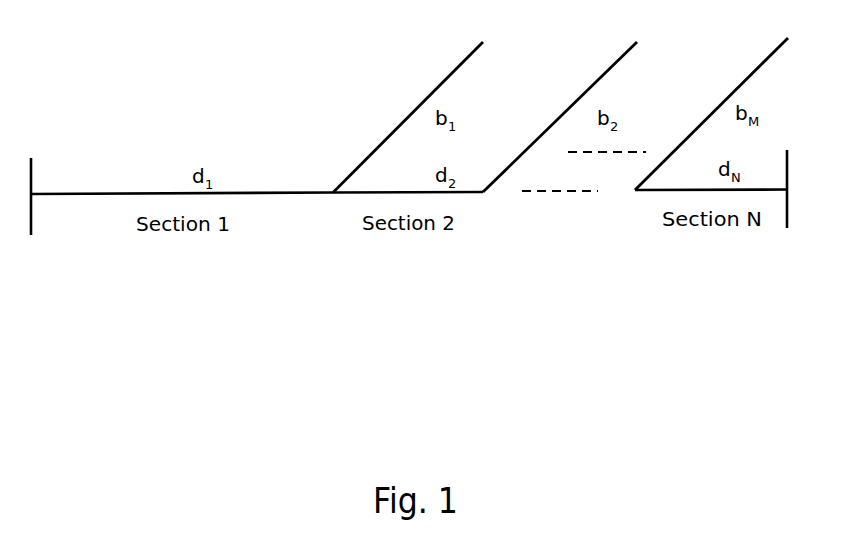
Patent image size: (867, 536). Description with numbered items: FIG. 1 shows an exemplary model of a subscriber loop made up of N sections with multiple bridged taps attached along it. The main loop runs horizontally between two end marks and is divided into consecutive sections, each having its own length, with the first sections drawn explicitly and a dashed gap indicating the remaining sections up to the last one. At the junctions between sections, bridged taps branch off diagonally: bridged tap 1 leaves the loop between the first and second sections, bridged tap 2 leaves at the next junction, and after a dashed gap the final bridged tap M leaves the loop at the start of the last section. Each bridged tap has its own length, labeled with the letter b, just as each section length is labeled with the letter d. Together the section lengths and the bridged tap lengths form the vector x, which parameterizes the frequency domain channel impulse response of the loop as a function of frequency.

The bridged tap 1 is at (415, 98).
The bridged tap 2 is at (576, 98).
The bridged tap M is at (727, 97).